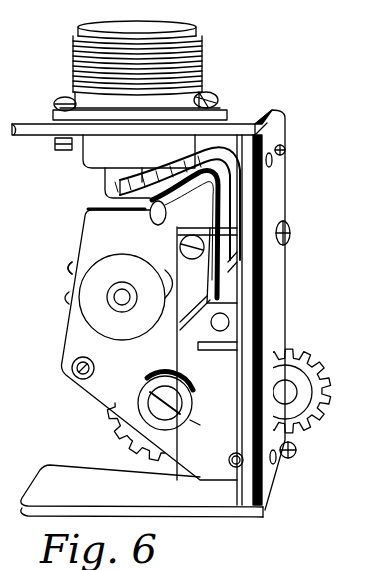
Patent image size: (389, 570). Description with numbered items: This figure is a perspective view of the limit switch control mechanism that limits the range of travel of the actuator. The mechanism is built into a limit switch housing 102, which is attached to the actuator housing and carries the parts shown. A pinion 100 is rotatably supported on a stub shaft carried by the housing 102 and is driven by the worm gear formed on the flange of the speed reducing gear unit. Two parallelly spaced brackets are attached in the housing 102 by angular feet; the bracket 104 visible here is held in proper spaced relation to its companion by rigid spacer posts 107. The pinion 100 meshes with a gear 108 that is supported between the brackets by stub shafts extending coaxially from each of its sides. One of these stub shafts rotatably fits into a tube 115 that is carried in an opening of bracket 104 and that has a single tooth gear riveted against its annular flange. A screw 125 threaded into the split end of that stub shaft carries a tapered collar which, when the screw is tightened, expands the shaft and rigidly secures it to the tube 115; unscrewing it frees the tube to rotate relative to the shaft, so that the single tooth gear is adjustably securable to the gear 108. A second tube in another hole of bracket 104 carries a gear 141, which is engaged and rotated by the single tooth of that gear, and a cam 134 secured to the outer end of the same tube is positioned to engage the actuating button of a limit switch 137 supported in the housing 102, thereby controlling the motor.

The pinion 100 is at (298, 362).
The limit switch housing 102 is at (273, 181).
The bracket 104 is at (90, 221).
The spacer posts 107 is at (72, 378).
The gear 108 is at (118, 430).
The tube 115 is at (193, 400).
The screw 125 is at (146, 410).
The cam 134 is at (117, 256).
The limit switch 137 is at (183, 302).
The gear 141 is at (70, 268).